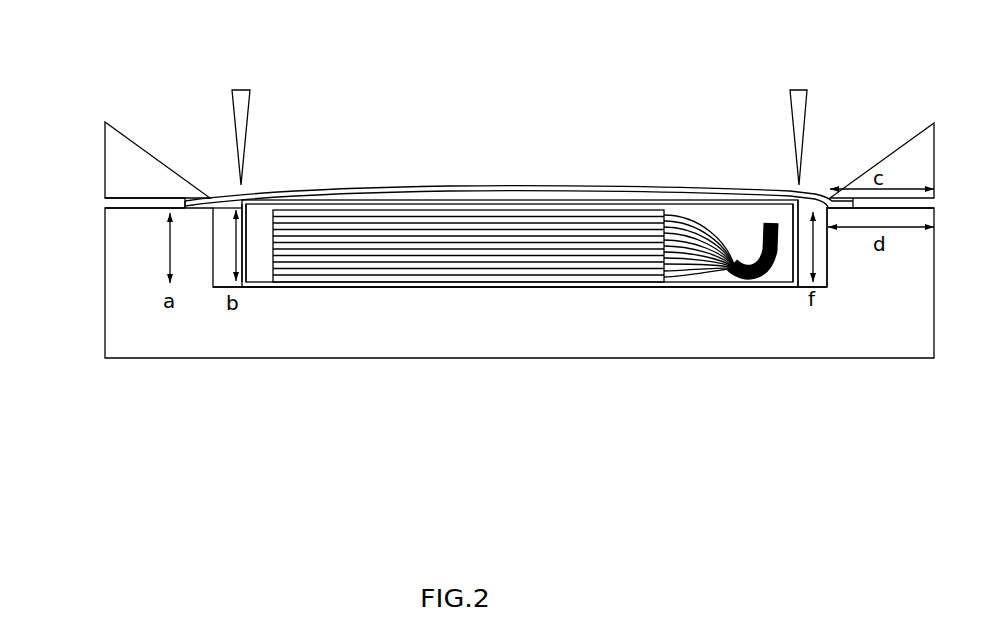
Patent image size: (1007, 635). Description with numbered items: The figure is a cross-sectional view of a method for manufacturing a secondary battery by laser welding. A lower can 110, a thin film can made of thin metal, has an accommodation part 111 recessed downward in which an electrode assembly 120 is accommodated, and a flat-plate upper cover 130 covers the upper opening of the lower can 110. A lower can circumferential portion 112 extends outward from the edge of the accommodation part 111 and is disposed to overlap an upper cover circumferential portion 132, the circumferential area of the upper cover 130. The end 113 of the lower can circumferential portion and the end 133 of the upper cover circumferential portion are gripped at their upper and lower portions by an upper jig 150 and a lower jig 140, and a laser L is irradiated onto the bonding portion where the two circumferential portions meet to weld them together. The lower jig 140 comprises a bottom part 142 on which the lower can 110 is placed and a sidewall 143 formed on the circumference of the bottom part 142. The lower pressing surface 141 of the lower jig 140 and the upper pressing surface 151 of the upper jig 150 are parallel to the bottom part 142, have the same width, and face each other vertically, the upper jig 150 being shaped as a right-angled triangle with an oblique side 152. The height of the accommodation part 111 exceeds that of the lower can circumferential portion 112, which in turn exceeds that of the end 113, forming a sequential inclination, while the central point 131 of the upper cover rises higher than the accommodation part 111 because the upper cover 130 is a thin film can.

The lower can 110 is at (494, 304).
The accommodation part 111 is at (797, 262).
The lower can circumferential portion 112 is at (232, 212).
The end of lower can circumferential portion 113 is at (222, 212).
The electrode assembly 120 is at (450, 268).
The upper cover 130 is at (519, 159).
The central point of upper cover 131 is at (520, 186).
The upper cover circumferential portion 132 is at (221, 195).
The end of upper cover circumferential portion 133 is at (210, 196).
The lower jig 140 is at (80, 313).
The lower pressing surface 141 is at (108, 209).
The bottom part 142 is at (565, 288).
The sidewall 143 is at (829, 255).
The upper jig 150 is at (476, 149).
The upper pressing surface 151 is at (105, 198).
The oblique side of right-angled triangle 152 is at (139, 145).
The laser L is at (241, 88).